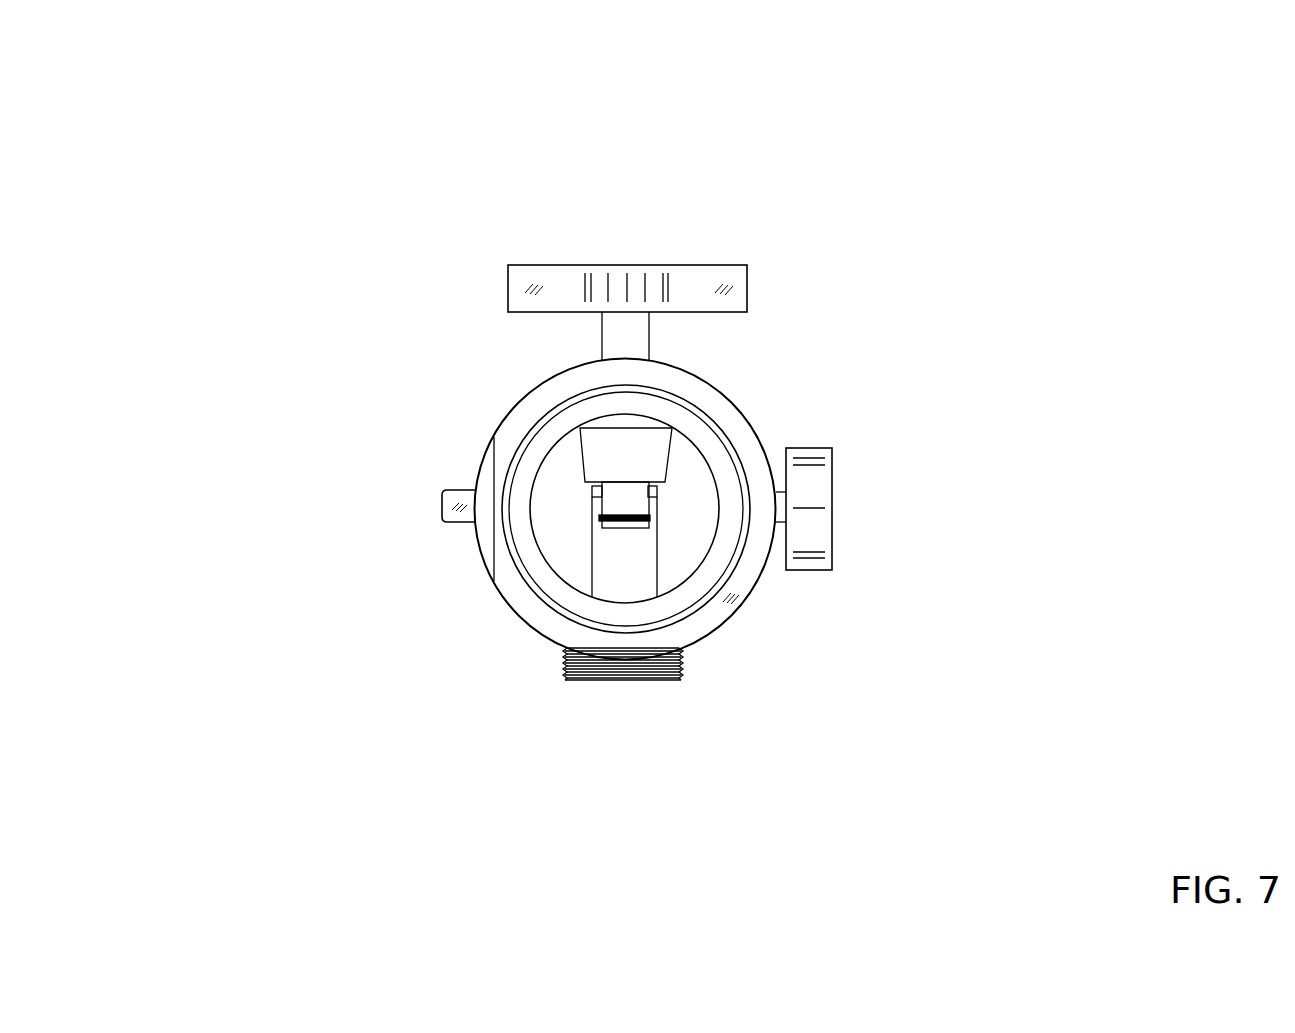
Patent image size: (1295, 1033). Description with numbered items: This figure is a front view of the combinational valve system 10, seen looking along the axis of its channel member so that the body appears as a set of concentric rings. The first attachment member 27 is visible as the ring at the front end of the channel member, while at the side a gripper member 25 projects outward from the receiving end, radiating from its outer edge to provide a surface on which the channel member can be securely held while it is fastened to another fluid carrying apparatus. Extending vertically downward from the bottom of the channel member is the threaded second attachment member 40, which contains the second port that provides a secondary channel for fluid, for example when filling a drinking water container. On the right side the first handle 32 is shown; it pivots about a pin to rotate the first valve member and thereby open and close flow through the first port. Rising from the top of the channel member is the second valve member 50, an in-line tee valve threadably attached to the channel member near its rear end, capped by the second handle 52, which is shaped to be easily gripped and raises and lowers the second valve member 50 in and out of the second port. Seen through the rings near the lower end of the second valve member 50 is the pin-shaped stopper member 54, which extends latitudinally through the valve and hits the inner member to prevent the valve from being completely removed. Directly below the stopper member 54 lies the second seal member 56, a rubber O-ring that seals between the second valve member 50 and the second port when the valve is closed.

The combinational valve system 10 is at (182, 122).
The gripper members 25 is at (440, 502).
The first attachment member 27 is at (558, 613).
The first handle 32 is at (817, 527).
The second attachment member 40 is at (663, 667).
The second valve member 50 is at (640, 332).
The second handle 52 is at (688, 277).
The stopper member 54 is at (596, 492).
The second seal member 56 is at (650, 518).